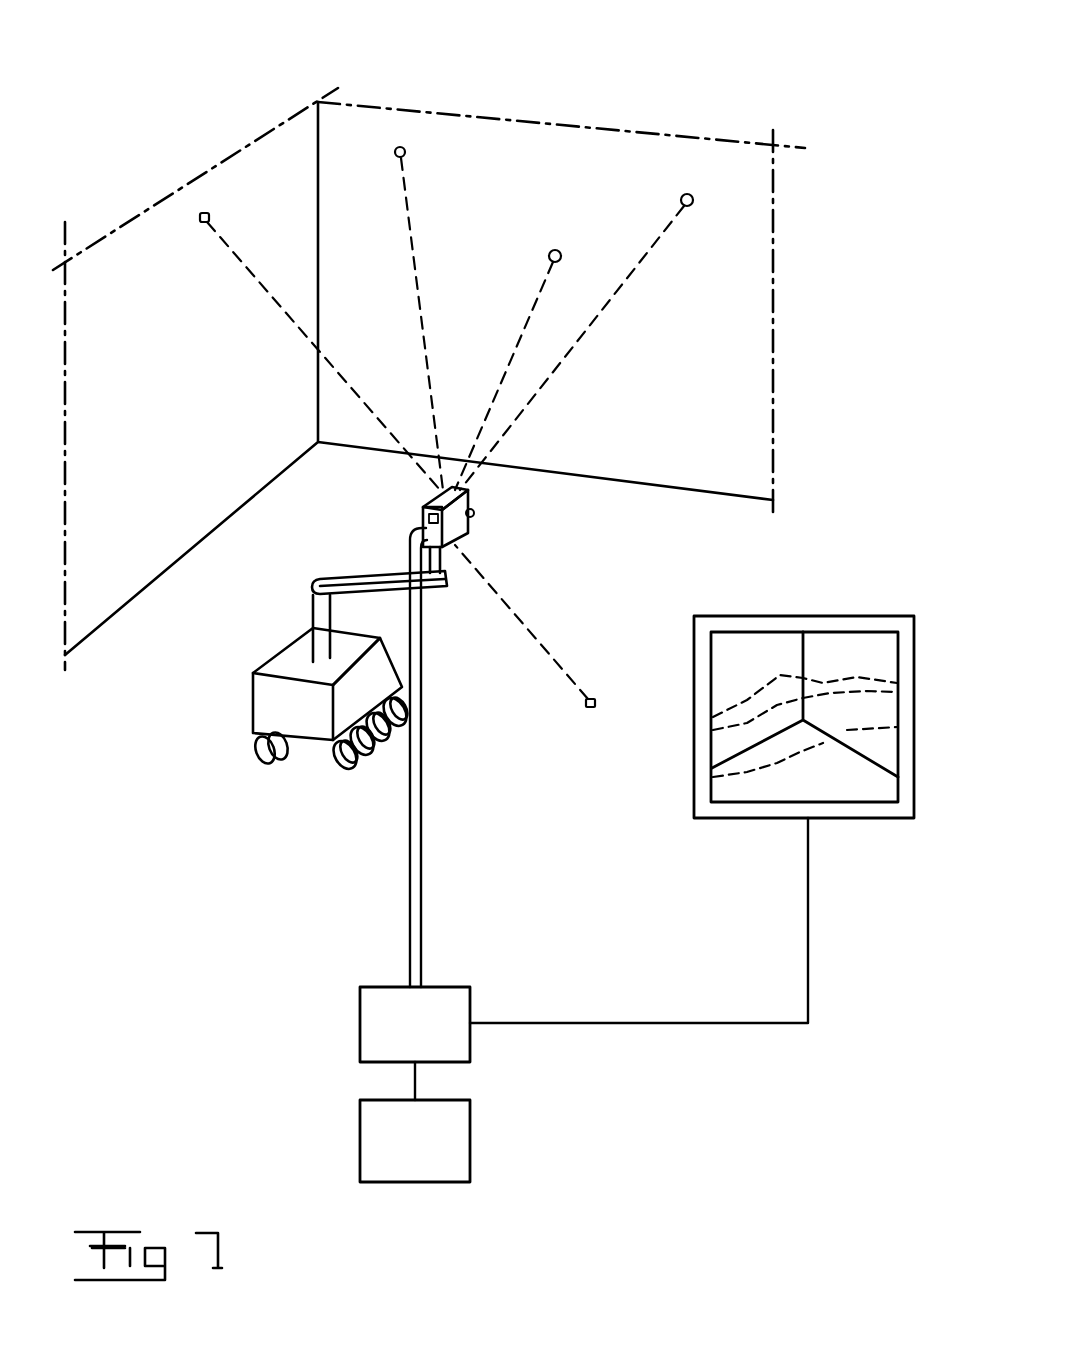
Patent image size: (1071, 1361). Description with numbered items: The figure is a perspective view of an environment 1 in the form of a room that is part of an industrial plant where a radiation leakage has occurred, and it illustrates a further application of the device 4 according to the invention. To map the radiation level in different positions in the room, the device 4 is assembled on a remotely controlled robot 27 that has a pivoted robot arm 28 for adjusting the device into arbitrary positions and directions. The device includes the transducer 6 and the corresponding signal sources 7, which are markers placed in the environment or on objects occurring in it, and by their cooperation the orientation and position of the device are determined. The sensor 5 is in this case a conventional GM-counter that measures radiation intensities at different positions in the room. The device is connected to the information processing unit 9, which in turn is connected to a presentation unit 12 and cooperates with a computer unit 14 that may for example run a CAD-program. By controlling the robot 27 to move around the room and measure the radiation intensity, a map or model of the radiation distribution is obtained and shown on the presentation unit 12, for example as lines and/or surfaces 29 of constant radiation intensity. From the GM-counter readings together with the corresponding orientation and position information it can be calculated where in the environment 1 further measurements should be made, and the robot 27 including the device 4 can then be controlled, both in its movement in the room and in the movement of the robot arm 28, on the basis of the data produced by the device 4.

The environment 1 is at (667, 398).
The device 4 is at (467, 627).
The sensor 5 is at (455, 532).
The transducer 6 is at (440, 487).
The signal sources 7 is at (204, 212).
The information processing unit 9 is at (382, 1023).
The presentation unit 12 is at (833, 778).
The computer unit 14 is at (407, 1168).
The robot 27 is at (282, 706).
The robot arm 28 is at (345, 575).
The lines and/or surfaces 29 is at (827, 683).